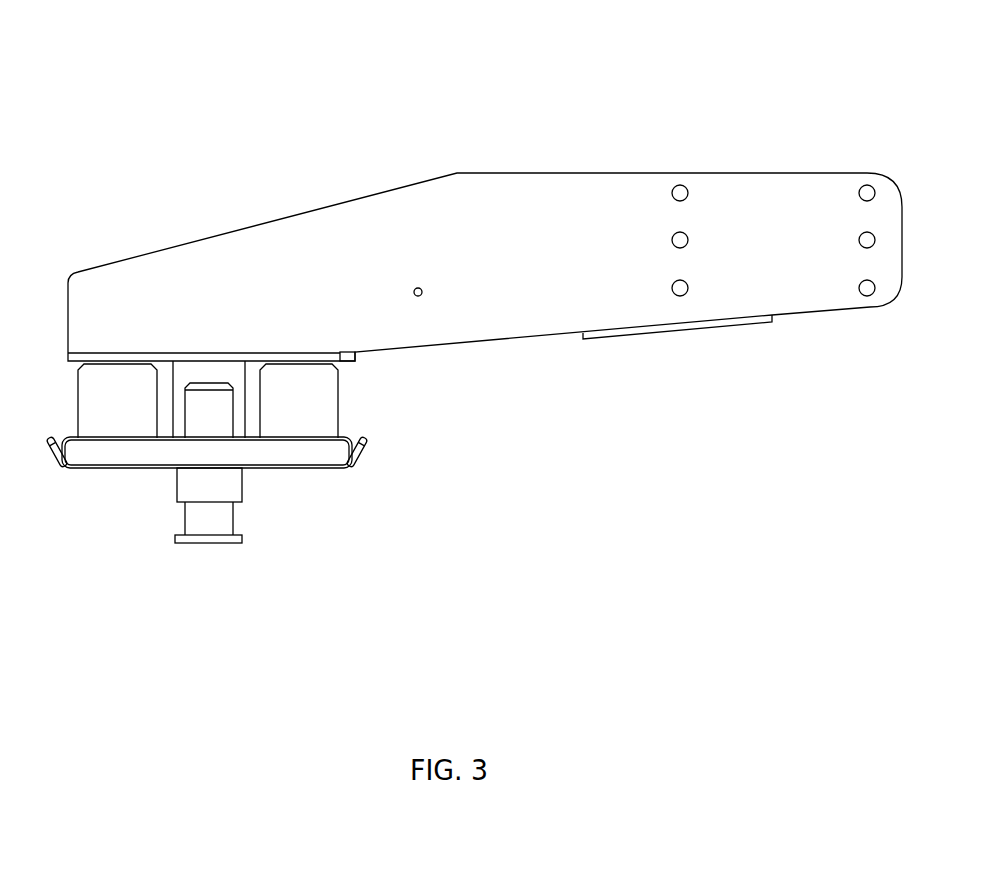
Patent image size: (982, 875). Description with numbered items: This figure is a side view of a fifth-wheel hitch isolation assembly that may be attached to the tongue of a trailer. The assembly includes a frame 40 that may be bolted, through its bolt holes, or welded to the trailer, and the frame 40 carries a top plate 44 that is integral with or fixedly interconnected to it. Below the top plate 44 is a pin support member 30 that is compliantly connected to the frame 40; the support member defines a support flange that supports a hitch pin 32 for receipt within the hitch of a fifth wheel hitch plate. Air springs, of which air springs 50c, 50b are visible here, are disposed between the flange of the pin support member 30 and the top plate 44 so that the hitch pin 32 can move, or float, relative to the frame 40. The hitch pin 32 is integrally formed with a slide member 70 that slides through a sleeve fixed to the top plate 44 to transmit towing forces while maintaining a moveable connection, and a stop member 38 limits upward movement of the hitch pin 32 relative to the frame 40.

The frame 40 is at (535, 240).
The top plate 44 is at (343, 357).
The air spring 50c is at (116, 402).
The air spring 50b is at (295, 418).
The slide member 70 is at (234, 378).
The stop member 38 is at (205, 413).
The pin support member 30 is at (327, 456).
The hitch pin 32 is at (205, 514).